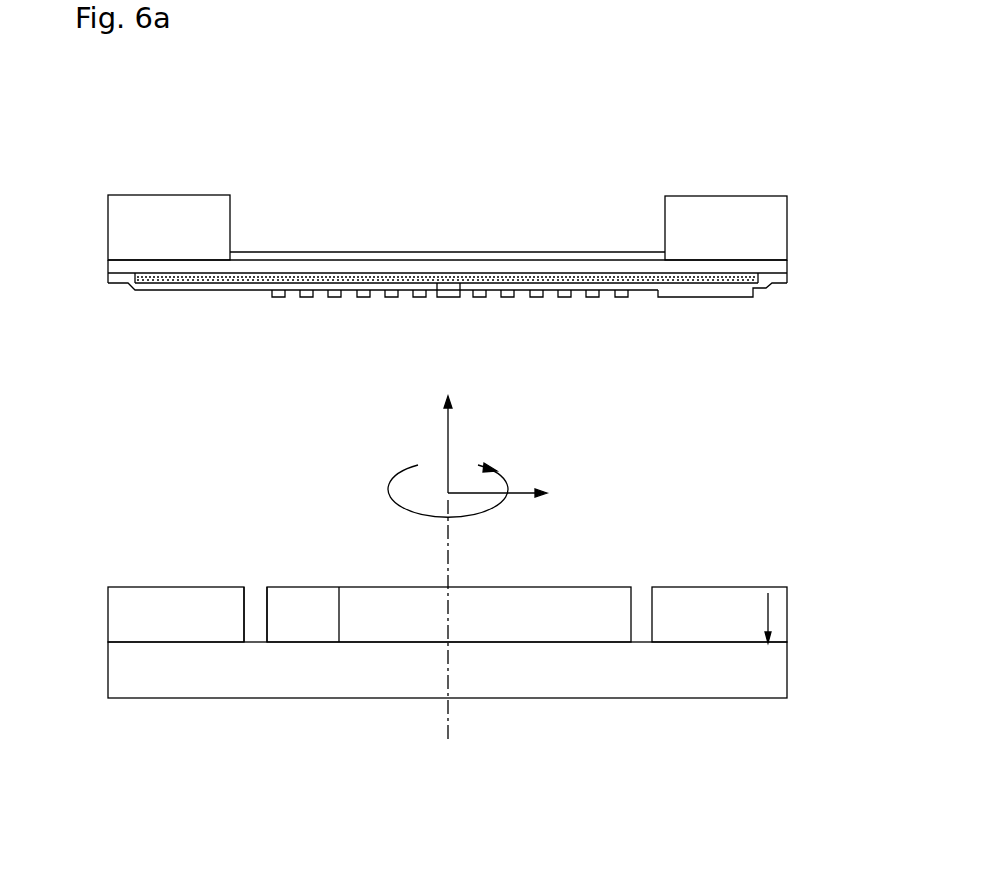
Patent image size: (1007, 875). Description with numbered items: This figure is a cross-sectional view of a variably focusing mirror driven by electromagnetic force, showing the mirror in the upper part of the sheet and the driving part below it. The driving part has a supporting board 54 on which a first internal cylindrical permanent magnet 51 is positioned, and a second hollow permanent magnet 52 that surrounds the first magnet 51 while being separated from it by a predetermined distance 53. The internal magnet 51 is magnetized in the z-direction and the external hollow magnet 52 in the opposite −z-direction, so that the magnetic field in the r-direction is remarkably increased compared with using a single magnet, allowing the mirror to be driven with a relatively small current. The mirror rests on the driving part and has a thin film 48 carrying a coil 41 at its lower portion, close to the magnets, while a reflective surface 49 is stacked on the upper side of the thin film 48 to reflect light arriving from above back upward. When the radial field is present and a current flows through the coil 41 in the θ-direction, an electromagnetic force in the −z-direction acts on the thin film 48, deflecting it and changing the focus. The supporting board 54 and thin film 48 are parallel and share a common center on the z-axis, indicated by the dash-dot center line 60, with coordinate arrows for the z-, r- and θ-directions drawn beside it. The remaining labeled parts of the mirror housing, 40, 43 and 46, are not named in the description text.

The polishing head body 40 is at (757, 228).
The coil 41 is at (300, 297).
The lower plate 43 is at (713, 298).
The membrane layer 46 is at (148, 281).
The thin film 48 is at (300, 265).
The reflective surface 49 is at (580, 252).
The first internal cylindrical permanent magnet 51 is at (543, 617).
The second hollow permanent magnet 52 is at (690, 610).
The predetermined distance 53 is at (257, 605).
The supporting board 54 is at (135, 676).
The rotation axis 60 is at (459, 580).